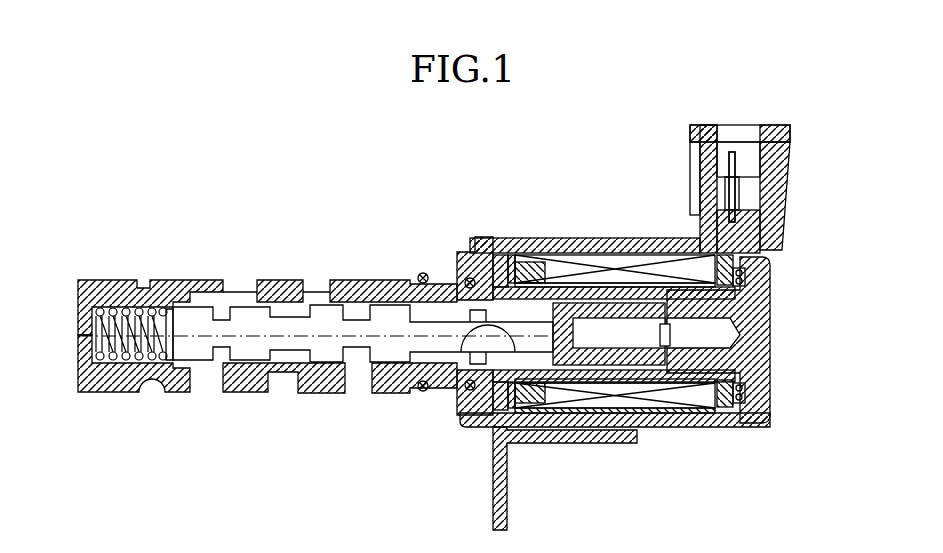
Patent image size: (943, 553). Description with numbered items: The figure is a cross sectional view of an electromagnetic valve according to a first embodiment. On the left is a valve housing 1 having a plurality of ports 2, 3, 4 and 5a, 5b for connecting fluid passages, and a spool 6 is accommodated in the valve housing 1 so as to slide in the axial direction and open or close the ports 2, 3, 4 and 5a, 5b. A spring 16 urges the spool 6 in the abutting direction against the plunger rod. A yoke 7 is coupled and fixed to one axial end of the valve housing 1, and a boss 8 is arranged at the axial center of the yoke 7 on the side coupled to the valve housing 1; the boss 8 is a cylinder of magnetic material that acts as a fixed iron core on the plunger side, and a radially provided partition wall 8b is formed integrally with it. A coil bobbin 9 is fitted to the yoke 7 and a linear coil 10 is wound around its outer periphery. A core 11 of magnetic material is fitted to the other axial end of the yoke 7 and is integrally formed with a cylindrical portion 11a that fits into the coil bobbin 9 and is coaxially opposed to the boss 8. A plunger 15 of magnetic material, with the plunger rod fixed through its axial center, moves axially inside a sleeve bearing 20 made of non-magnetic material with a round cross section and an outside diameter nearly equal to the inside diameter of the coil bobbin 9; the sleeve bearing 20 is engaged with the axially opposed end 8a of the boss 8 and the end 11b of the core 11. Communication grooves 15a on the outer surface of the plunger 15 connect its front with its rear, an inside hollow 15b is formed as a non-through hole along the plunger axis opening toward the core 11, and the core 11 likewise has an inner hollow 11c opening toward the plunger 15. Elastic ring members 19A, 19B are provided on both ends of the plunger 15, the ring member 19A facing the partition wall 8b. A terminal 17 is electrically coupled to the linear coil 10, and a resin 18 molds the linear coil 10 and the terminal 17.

The valve housing 1 is at (158, 280).
The port 2 is at (284, 378).
The port 3 is at (239, 283).
The port 4 is at (317, 282).
The port 5a is at (211, 378).
The port 5b is at (358, 378).
The spool 6 is at (334, 318).
The yoke 7 is at (490, 237).
The boss 8 is at (522, 263).
The end of boss 8a is at (540, 263).
The partition wall 8b is at (447, 343).
The coil bobbin 9 is at (767, 257).
The linear coil 10 is at (629, 270).
The core 11 is at (753, 303).
The cylindrical portion 11a is at (713, 362).
The end of core 11b is at (657, 423).
The inner hollow 11c is at (715, 340).
The plunger 15 is at (613, 437).
The communication grooves 15a is at (593, 430).
The inside hollow 15b is at (703, 433).
The spring 16 is at (115, 383).
The terminal 17 is at (750, 142).
The resin 18 is at (703, 158).
The ring member 19A is at (542, 438).
The ring member 19B is at (664, 275).
The sleeve bearing 20 is at (586, 268).